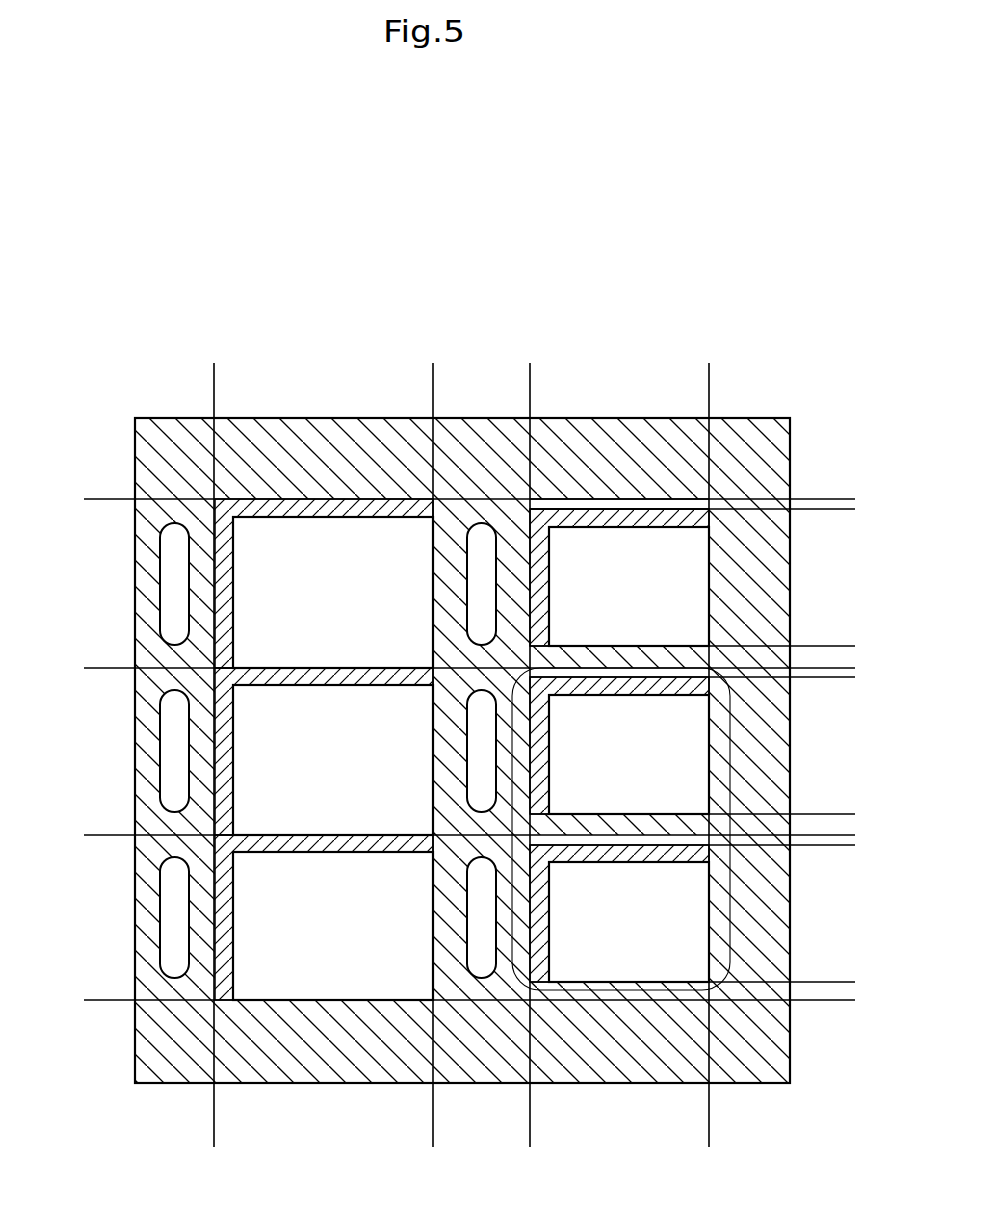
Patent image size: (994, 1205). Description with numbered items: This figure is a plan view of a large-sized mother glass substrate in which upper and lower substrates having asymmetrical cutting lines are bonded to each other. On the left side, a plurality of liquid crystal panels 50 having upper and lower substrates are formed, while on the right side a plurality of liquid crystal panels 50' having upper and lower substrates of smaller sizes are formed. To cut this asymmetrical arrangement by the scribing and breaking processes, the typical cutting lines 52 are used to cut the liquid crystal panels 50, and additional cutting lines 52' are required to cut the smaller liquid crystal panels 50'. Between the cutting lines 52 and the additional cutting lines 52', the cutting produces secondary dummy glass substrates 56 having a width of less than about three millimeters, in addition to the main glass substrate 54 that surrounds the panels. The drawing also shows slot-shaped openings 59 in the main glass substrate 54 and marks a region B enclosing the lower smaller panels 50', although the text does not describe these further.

The liquid crystal panels 50 is at (324, 649).
The liquid crystal panels of smaller sizes 50' is at (619, 652).
The cutting lines 52 is at (442, 710).
The additional cutting lines 52' is at (725, 745).
The main glass substrate 54 is at (322, 1057).
The secondary dummy glass substrates 56 is at (697, 505).
The slot 59 is at (175, 975).
The region B is at (647, 990).